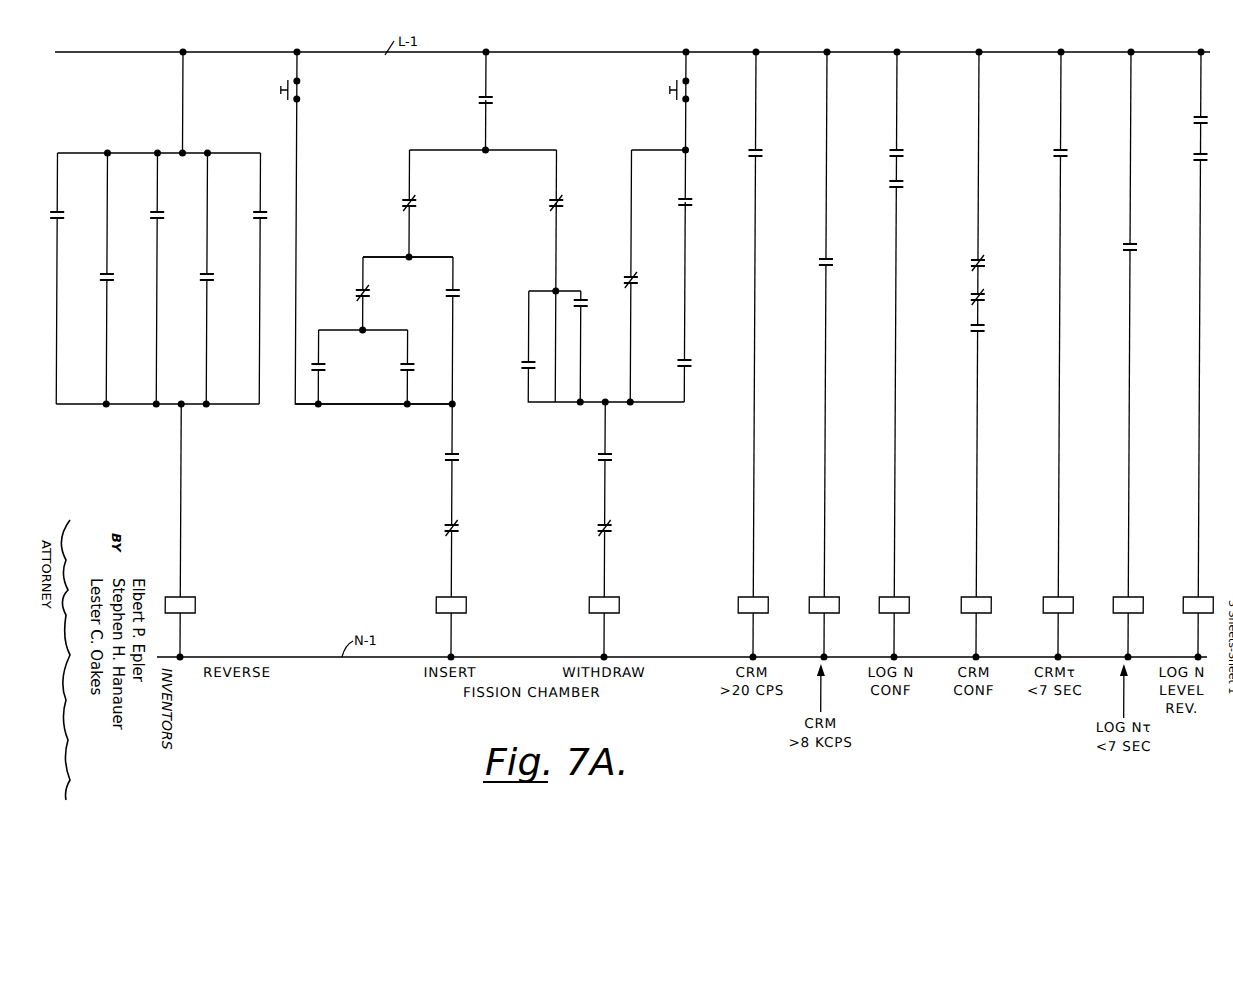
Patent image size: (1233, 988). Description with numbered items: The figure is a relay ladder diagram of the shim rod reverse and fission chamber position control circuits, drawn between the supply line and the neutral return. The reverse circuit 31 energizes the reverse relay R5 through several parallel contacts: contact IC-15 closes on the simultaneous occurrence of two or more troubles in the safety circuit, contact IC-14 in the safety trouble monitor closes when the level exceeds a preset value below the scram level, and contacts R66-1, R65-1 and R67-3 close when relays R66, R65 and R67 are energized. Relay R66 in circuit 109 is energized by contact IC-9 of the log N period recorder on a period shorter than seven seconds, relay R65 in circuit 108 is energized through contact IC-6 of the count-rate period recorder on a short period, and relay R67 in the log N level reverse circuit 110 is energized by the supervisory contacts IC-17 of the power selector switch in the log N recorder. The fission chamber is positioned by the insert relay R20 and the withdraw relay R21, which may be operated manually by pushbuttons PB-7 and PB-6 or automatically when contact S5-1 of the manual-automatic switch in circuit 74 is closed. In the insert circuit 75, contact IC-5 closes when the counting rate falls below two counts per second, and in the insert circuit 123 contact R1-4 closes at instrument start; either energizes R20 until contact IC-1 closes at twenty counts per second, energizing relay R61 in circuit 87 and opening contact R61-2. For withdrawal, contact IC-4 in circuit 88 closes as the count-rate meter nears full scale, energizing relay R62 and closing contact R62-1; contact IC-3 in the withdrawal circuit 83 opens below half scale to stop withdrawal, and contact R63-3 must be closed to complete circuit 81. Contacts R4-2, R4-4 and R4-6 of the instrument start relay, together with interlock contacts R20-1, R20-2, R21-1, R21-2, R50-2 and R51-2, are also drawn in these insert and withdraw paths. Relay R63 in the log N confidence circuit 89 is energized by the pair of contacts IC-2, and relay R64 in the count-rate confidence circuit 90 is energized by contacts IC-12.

The reverse circuit 31 is at (184, 506).
The circuit 74 is at (487, 132).
The fission chamber insert circuit 75 is at (366, 257).
The circuit 81 is at (688, 244).
The fission chamber withdrawal circuit 83 is at (558, 238).
The circuit 87 is at (758, 446).
The circuit 88 is at (829, 446).
The log N confidence circuit 89 is at (898, 438).
The count rate meter confidence circuit 90 is at (981, 455).
The circuit 108 is at (1063, 456).
The circuit 109 is at (1133, 492).
The log N level reverse circuit 110 is at (1199, 396).
The fission-chamber insert circuit 123 is at (456, 422).
The pushbutton PB-7 is at (288, 90).
The pushbutton PB-6 is at (677, 90).
The contact S5-1 is at (490, 100).
The reverse relay R5 is at (189, 598).
The insert relay R20 is at (460, 598).
The withdraw relay R21 is at (613, 598).
The relay R61 is at (759, 598).
The relay R62 is at (830, 598).
The log N confidence relay R63 is at (900, 598).
The count-rate confidence relay R64 is at (982, 598).
The relay R65 is at (1064, 598).
The relay R66 is at (1134, 598).
The relay R67 is at (1198, 616).
The contact IC-1 is at (760, 152).
The contacts IC-2 is at (906, 145).
The contact IC-3 is at (560, 201).
The contact IC-4 is at (831, 261).
The contact IC-5 is at (323, 364).
The contact IC-6 is at (1064, 152).
The contact IC-9 is at (1134, 259).
The contacts IC-12 is at (988, 255).
The contact IC-14 is at (254, 217).
The contact IC-15 is at (90, 216).
The supervisory contacts IC-17 is at (1194, 113).
The contact R1-4 is at (457, 292).
The relay contact R4-2 is at (630, 276).
The relay contact R4-4 is at (367, 292).
The relay contact R4-6 is at (689, 200).
The relay contact R20-1 is at (407, 367).
The relay contact R20-2 is at (610, 527).
The relay contact R21-1 is at (528, 364).
The relay contact R21-2 is at (457, 527).
The relay contact R50-2 is at (457, 455).
The relay contact R51-2 is at (610, 455).
The contact R61-2 is at (413, 201).
The contact R62-1 is at (600, 287).
The contact R63-3 is at (689, 360).
The contact R65-1 is at (136, 278).
The contact R66-1 is at (186, 216).
The contact R67-3 is at (236, 278).